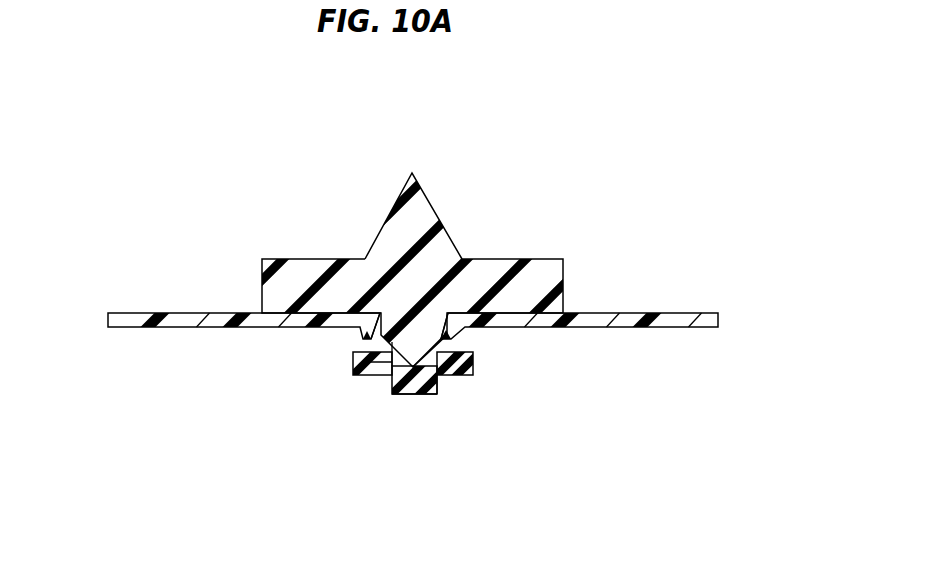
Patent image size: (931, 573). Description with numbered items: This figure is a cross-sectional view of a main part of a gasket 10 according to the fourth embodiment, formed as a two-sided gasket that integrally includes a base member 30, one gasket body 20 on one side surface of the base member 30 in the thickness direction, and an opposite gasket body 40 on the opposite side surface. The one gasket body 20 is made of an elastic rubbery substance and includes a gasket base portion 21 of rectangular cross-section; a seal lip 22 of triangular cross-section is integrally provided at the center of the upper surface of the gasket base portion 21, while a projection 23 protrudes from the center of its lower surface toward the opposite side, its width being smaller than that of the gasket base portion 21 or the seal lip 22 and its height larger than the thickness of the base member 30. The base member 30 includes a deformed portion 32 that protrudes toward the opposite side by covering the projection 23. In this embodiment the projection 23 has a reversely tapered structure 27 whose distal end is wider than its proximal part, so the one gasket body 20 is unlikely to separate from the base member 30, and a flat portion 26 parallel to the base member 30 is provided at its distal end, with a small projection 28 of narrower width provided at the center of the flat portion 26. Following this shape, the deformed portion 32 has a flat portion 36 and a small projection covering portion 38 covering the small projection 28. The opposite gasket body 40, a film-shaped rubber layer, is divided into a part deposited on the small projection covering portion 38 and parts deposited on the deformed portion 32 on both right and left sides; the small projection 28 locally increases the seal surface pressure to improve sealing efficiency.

The gasket 10 is at (244, 245).
The one gasket body 20 is at (551, 253).
The gasket base portion 21 is at (540, 285).
The seal lip 22 is at (418, 208).
The projection 23 is at (357, 349).
The flat portion 26 is at (374, 372).
The reversely tapered structure 27 is at (356, 337).
The small projection 28 is at (405, 372).
The base member 30 is at (163, 310).
The deformed portion 32 is at (463, 349).
The flat portion 36 is at (444, 373).
The small projection covering portion 38 is at (430, 383).
The opposite gasket body 40 is at (447, 412).